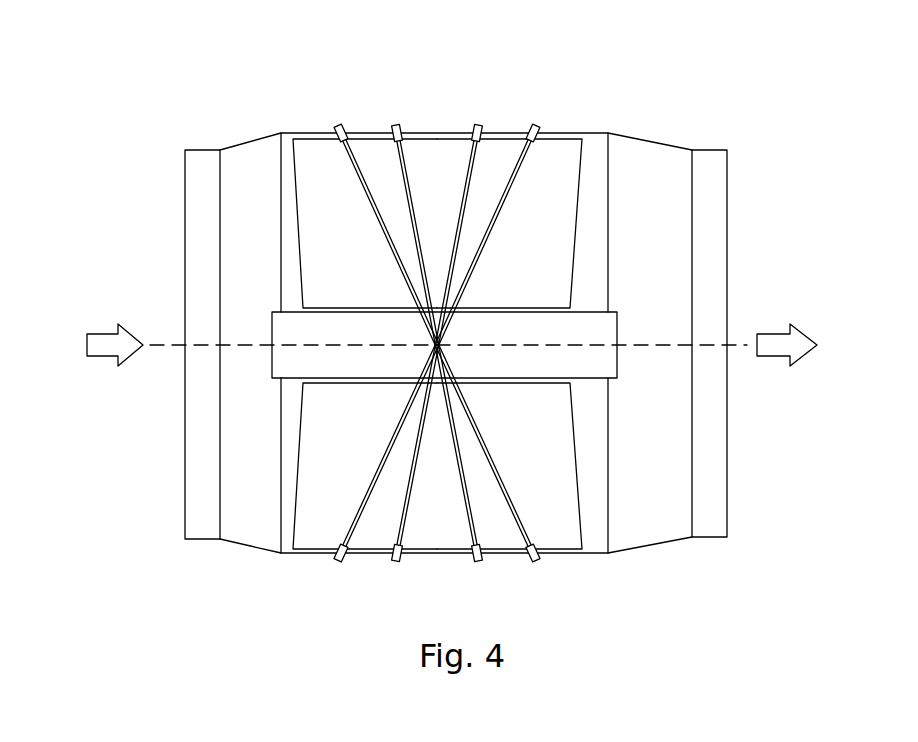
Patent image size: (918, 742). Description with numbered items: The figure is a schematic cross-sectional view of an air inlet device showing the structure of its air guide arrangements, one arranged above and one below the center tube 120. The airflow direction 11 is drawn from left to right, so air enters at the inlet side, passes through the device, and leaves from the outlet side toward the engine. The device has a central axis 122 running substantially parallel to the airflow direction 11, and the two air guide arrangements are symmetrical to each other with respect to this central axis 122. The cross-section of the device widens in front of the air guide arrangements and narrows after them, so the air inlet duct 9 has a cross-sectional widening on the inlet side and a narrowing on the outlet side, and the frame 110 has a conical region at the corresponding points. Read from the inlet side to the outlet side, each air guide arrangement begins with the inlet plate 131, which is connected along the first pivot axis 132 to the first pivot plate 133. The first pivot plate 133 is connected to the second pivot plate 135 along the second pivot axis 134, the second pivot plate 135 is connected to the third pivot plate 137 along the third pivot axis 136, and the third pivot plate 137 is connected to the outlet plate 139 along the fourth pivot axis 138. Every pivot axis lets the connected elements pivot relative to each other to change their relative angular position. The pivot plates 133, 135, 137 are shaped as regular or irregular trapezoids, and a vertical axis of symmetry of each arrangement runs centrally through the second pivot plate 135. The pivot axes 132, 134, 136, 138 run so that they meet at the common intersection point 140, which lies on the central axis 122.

The air inlet duct 9 is at (643, 520).
The airflow direction 11 is at (105, 330).
The frame 110 is at (302, 118).
The center tube 120 is at (295, 328).
The central axis 122 is at (165, 347).
The inlet plate 131 is at (320, 187).
The first pivot axis 132 is at (340, 128).
The first pivot plate 133 is at (382, 167).
The second pivot axis 134 is at (396, 128).
The second pivot plate 135 is at (425, 167).
The third pivot axis 136 is at (478, 127).
The third pivot plate 137 is at (491, 167).
The fourth pivot axis 138 is at (536, 127).
The outlet plate 139 is at (558, 210).
The common intersection point 140 is at (437, 345).